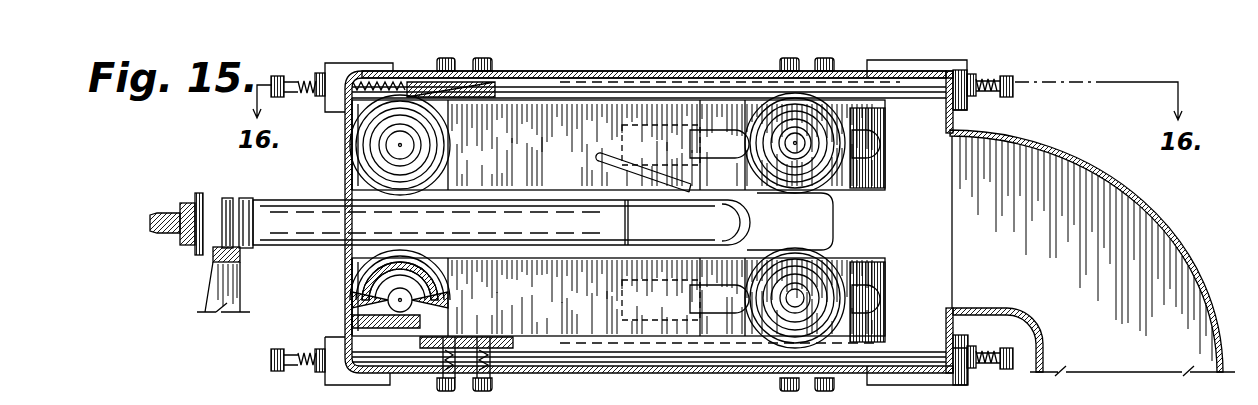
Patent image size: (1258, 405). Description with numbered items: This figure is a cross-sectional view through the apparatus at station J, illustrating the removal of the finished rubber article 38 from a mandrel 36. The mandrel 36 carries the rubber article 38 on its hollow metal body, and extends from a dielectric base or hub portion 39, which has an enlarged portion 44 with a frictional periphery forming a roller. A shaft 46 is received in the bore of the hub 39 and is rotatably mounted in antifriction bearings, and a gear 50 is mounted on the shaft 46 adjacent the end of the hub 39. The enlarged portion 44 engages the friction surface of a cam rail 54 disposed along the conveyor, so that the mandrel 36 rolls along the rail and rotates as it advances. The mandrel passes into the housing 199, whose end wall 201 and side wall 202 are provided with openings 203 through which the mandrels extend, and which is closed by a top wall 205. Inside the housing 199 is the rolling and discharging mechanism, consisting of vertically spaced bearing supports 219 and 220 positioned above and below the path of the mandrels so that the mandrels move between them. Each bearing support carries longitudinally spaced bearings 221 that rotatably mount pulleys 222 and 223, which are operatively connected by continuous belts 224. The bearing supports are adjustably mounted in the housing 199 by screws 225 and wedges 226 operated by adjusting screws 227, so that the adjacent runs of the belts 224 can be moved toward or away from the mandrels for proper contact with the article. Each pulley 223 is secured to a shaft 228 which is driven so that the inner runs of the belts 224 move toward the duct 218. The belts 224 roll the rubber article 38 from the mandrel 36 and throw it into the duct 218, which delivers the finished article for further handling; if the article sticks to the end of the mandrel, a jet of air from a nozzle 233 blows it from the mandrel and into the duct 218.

The mandrel 36 is at (480, 203).
The rubber article 38 is at (740, 227).
The base or hub portion 39 is at (245, 200).
The enlarged portion 44 is at (228, 200).
The shaft 46 is at (145, 218).
The gear 50 is at (200, 192).
The cam rail 54 is at (223, 262).
The housing 199 is at (683, 57).
The end wall 201 is at (927, 135).
The side wall 202 is at (343, 168).
The openings 203 is at (343, 255).
The top wall 205 is at (707, 73).
The duct 218 is at (1177, 217).
The bearing support 219 is at (577, 127).
The bearing support 220 is at (583, 312).
The bearings 221 is at (370, 317).
The pulley 222 is at (372, 160).
The pulley 223 is at (813, 110).
The continuous belt 224 is at (517, 97).
The screw 225 is at (783, 57).
The wedge 226 is at (883, 80).
The adjusting screw 227 is at (1010, 75).
The shaft 228 is at (800, 152).
The nozzle 233 is at (597, 168).